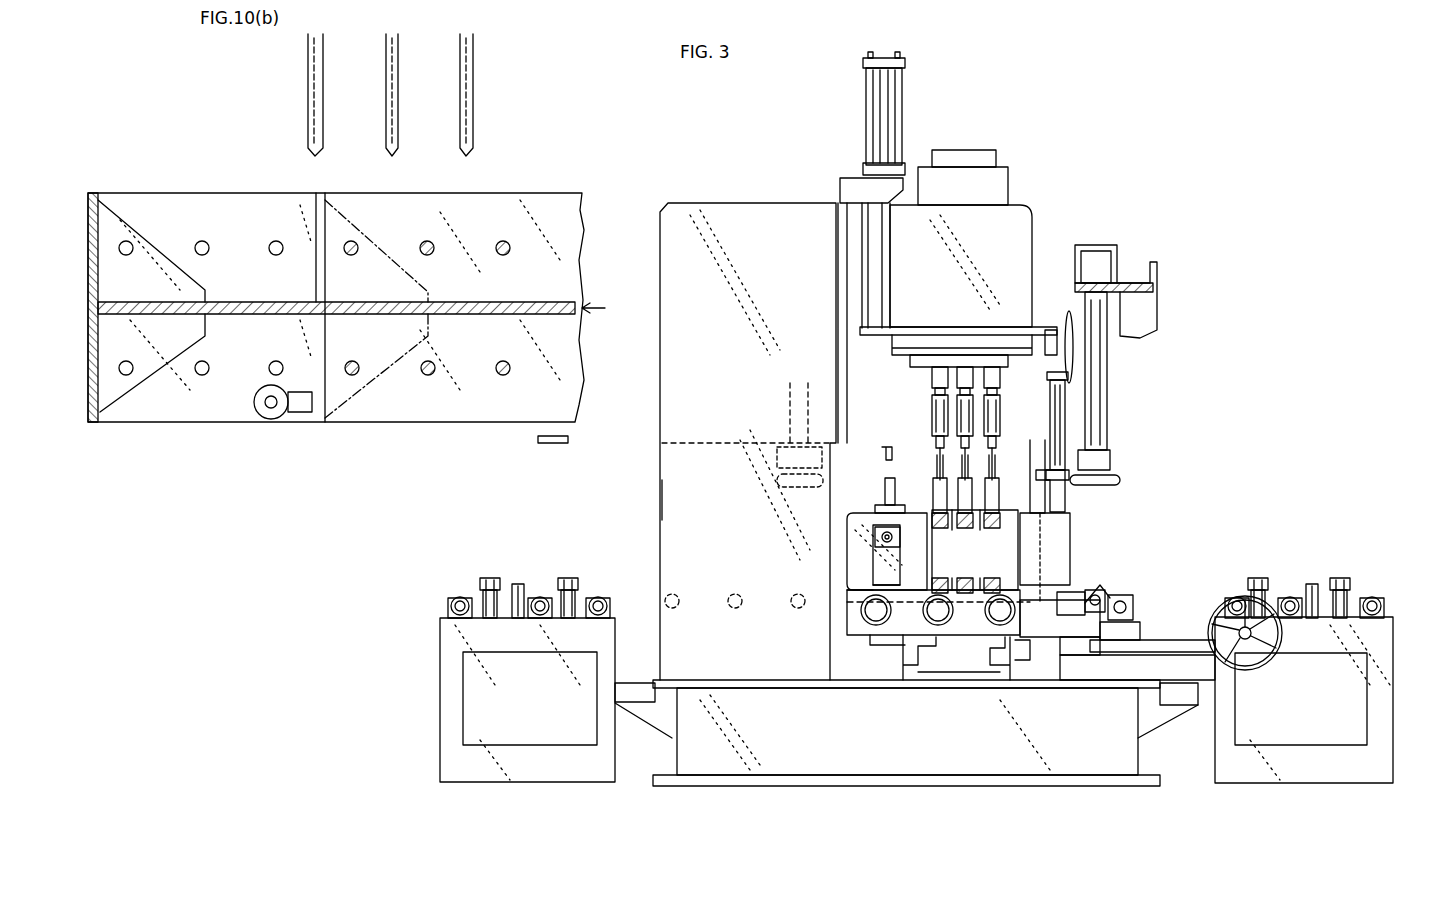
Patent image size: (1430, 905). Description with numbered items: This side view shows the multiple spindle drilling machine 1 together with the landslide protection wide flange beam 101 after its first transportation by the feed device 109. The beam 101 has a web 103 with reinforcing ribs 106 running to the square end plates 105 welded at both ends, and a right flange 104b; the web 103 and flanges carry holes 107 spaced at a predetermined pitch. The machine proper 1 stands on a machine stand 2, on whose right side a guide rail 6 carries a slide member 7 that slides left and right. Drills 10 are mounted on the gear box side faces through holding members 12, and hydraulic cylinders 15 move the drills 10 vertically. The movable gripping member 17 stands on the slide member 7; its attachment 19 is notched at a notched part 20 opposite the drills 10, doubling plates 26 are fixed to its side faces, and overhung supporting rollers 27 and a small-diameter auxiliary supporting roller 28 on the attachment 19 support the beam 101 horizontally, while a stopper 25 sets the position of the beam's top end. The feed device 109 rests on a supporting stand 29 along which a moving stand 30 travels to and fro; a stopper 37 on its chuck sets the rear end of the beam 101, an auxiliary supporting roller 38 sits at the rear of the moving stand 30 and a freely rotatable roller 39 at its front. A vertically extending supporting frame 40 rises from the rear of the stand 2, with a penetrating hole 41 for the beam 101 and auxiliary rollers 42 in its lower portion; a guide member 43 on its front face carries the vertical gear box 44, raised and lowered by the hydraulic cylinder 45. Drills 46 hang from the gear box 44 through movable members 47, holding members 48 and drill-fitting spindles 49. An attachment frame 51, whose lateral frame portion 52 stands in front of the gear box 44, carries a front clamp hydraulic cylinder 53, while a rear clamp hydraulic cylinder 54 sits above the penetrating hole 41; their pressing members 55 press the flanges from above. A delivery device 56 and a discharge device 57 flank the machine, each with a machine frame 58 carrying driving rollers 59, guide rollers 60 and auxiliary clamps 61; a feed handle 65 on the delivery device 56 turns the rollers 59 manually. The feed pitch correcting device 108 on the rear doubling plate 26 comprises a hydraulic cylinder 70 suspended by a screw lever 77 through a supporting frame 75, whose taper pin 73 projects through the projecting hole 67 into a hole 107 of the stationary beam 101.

In FIG. 3, the multiple spindle drilling machine 1 is at (830, 775).
In FIG. 3, the machine stand 2 is at (1125, 757).
In FIG. 3, the guide rail 6 is at (985, 675).
In FIG. 3, the slide member 7 is at (935, 672).
In FIG. 10B, the drills 10 is at (500, 247).
In FIG. 3, the drills 10 is at (975, 550).
In FIG. 3, the holding members 12 is at (1008, 494).
In FIG. 3, the hydraulic cylinders 15 is at (1050, 414).
In FIG. 3, the movable gripping member 17 is at (1068, 488).
In FIG. 3, the attachment 19 is at (1062, 497).
In FIG. 3, the notched part 20 is at (1015, 548).
In FIG. 10B, the stopper 25 is at (271, 419).
In FIG. 3, the doubling plates 26 is at (850, 522).
In FIG. 3, the overhung supporting rollers 27 is at (876, 625).
In FIG. 3, the small-diameter overhung auxiliary supporting roller 28 is at (1095, 585).
In FIG. 3, the supporting stand 29 is at (1180, 640).
In FIG. 3, the moving stand 30 is at (1088, 650).
In FIG. 10B, the stopper 37 is at (538, 440).
In FIG. 3, the overhung auxiliary supporting roller 38 is at (1055, 590).
In FIG. 3, the freely rotatable roller 39 is at (1120, 595).
In FIG. 3, the supporting frame 40 is at (740, 203).
In FIG. 3, the penetrating hole 41 is at (662, 502).
In FIG. 3, the auxiliary rollers 42 is at (679, 600).
In FIG. 3, the guide member 43 is at (852, 266).
In FIG. 3, the vertical gear box 44 is at (1018, 212).
In FIG. 3, the hydraulic cylinder 45 is at (898, 112).
In FIG. 10B, the drills 46 is at (322, 91).
In FIG. 3, the drills 46 is at (940, 462).
In FIG. 3, the movable members 47 is at (960, 355).
In FIG. 3, the holding members 48 is at (1000, 378).
In FIG. 3, the drill-fitting spindles 49 is at (1000, 416).
In FIG. 3, the attachment frame 51 is at (1085, 245).
In FIG. 3, the lateral frame portion 52 is at (1120, 262).
In FIG. 3, the front clamp hydraulic cylinder 53 is at (1107, 412).
In FIG. 3, the rear clamp hydraulic cylinder 54 is at (800, 430).
In FIG. 3, the pressing members 55 is at (1085, 485).
In FIG. 3, the delivery device 56 is at (1393, 770).
In FIG. 3, the discharge device 57 is at (588, 782).
In FIG. 3, the machine frames 58 is at (440, 692).
In FIG. 3, the driving rollers 59 is at (462, 597).
In FIG. 3, the guide roller 60 is at (490, 577).
In FIG. 3, the auxiliary clamps 61 is at (518, 583).
In FIG. 3, the feed handle 65 is at (1282, 633).
In FIG. 3, the projecting hole 67 is at (876, 574).
In FIG. 3, the hydraulic cylinder 70 is at (873, 553).
In FIG. 3, the taper pin 73 is at (874, 539).
In FIG. 3, the supporting frame 75 is at (878, 506).
In FIG. 3, the screw lever 77 is at (884, 488).
In FIG. 10B, the landslide protection wide flange beam 101 is at (232, 193).
In FIG. 10B, the web 103 is at (540, 300).
In FIG. 10B, the panel section 104b is at (492, 202).
In FIG. 10B, the end plates 105 is at (92, 192).
In FIG. 10B, the reinforcing ribs 106 is at (205, 290).
In FIG. 10B, the holes 107 is at (270, 247).
In FIG. 3, the feed pitch correcting device 108 is at (884, 470).
In FIG. 3, the feed device 109 is at (1128, 636).